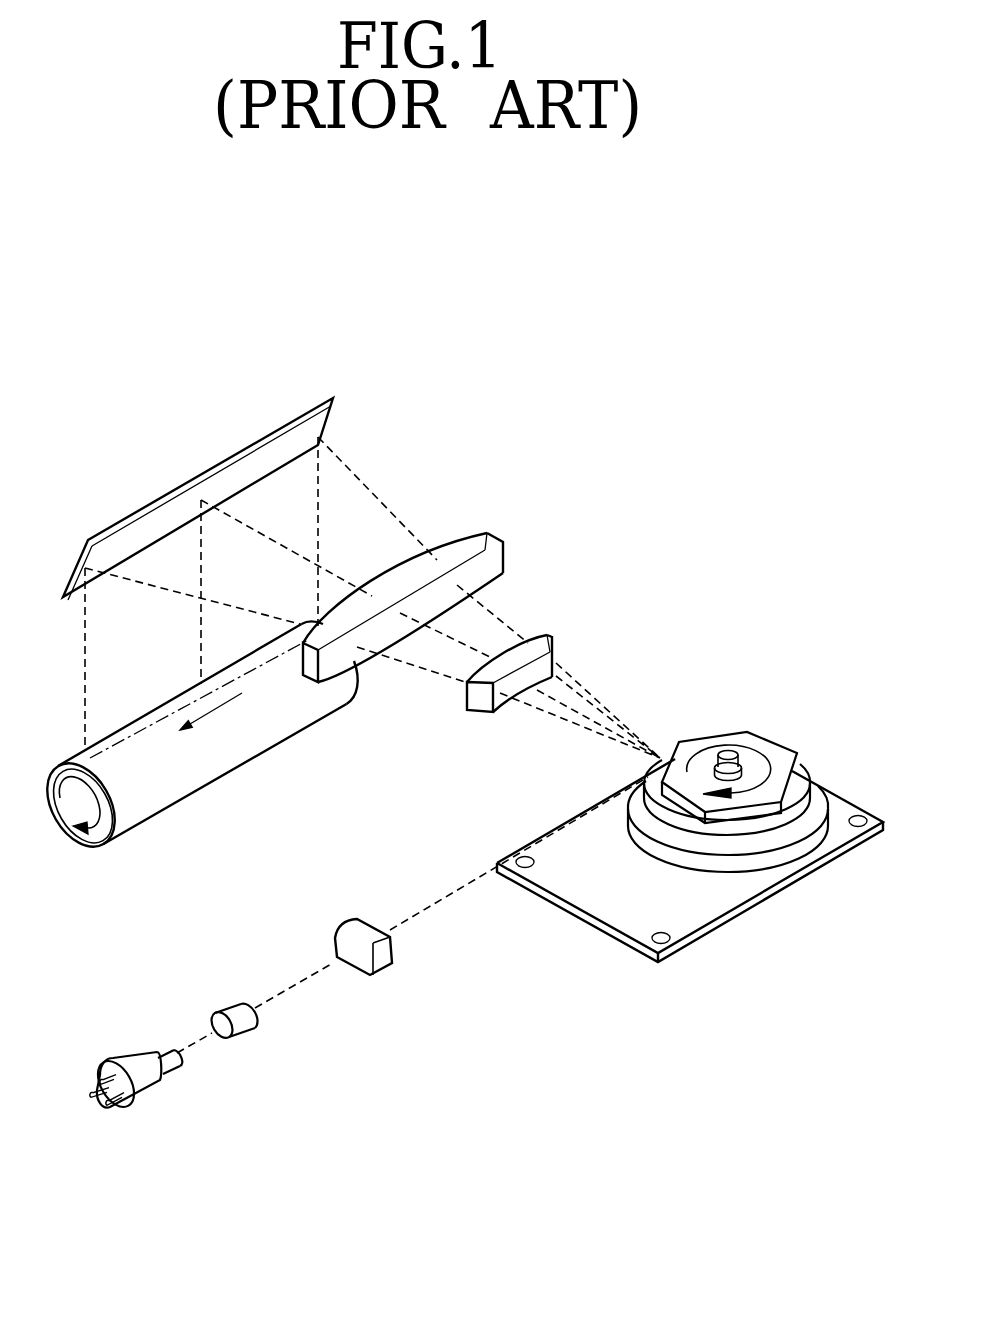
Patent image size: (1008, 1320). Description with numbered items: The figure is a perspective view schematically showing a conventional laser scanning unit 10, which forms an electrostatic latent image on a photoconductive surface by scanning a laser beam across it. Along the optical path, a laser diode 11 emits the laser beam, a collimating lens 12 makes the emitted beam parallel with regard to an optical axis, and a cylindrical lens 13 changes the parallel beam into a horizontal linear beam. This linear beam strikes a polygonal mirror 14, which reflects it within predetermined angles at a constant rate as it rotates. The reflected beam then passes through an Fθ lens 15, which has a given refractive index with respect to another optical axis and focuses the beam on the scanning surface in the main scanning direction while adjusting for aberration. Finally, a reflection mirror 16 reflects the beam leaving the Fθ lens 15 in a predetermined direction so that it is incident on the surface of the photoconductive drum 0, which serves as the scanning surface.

The laser scanning unit 10 is at (705, 347).
The laser diode 11 is at (143, 1075).
The collimating lens 12 is at (243, 1020).
The cylindrical lens 13 is at (387, 958).
The polygonal mirror 14 is at (762, 746).
The Fθ lens 15 is at (541, 633).
The reflection mirror 16 is at (209, 466).
The photoconductive drum 0 is at (140, 805).